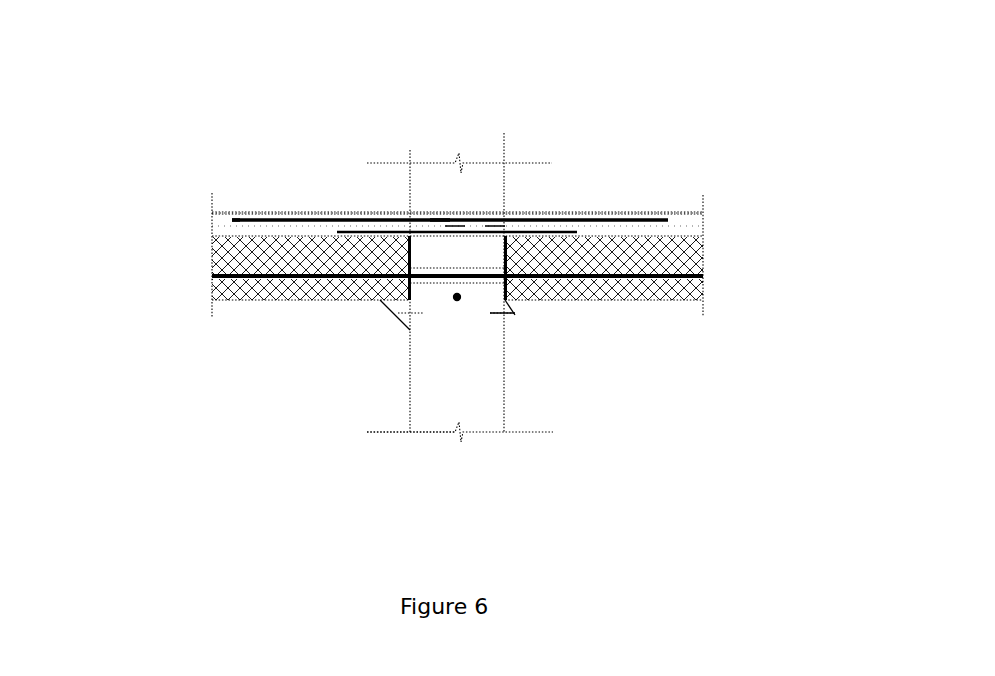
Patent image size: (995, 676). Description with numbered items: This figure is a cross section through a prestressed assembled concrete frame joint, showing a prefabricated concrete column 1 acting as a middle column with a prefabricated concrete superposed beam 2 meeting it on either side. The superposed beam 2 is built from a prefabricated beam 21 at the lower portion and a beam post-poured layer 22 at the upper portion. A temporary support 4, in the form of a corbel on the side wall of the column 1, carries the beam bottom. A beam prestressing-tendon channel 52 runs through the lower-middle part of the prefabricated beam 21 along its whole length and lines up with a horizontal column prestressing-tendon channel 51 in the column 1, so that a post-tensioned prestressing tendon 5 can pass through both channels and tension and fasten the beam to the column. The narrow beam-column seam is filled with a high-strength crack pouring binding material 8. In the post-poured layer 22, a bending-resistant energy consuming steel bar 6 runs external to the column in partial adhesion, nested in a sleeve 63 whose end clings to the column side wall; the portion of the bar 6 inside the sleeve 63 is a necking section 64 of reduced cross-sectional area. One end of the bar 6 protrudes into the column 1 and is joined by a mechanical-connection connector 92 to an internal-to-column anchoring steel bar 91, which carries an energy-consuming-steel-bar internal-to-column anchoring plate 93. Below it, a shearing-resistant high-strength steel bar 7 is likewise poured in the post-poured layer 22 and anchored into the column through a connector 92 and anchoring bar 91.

The prefabricated concrete column 1 is at (452, 476).
The prefabricated concrete superposed beam 2 is at (703, 232).
The prefabricated beam 21 is at (212, 298).
The beam post-poured layer 22 is at (212, 222).
The temporary support 4 is at (528, 357).
The post-tensioned prestressing tendon 5 is at (488, 284).
The column prestressing-tendon channel 51 is at (443, 283).
The beam prestressing-tendon channel 52 is at (332, 341).
The bending-resistant energy consuming steel bar 6 is at (228, 166).
The sleeve 63 is at (342, 166).
The necking section 64 is at (560, 166).
The shearing-resistant high-strength steel bar 7 is at (496, 202).
The high-strength crack pouring binding material 8 is at (545, 324).
The internal-to-column anchoring steel bar 91 is at (447, 226).
The mechanical-connection connector 92 is at (502, 165).
The energy-consuming-steel-bar internal-to-column anchoring plate 93 is at (435, 156).